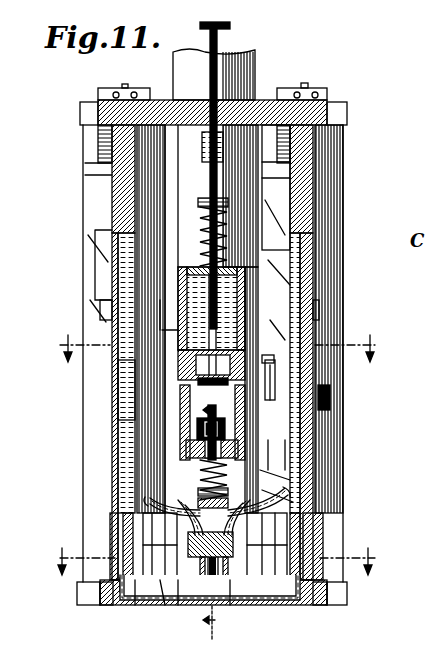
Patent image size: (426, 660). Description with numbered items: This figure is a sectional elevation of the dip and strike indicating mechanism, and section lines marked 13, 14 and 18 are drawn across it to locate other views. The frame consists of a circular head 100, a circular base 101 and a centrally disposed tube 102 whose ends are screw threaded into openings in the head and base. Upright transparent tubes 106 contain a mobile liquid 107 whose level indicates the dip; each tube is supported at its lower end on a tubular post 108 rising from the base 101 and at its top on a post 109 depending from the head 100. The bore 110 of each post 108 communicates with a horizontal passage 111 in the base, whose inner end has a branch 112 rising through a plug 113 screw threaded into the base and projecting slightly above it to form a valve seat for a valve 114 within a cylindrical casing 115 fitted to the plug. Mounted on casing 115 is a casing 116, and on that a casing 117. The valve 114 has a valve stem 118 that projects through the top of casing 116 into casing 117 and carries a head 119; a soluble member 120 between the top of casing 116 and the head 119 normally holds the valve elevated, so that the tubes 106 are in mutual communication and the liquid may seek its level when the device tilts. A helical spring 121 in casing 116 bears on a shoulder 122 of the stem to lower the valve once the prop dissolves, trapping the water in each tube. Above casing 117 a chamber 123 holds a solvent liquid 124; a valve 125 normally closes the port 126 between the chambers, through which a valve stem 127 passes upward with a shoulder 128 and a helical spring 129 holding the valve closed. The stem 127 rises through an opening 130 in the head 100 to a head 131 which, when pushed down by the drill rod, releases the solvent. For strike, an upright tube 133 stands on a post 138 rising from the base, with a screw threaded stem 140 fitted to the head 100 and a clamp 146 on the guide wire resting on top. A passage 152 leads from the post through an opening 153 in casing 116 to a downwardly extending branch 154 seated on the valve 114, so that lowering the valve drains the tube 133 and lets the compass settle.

The head 100 is at (347, 110).
The base 101 is at (347, 596).
The centrally disposed tube 102 is at (165, 200).
The upright parallel tubes 106 is at (112, 300).
The mobile liquid 107 is at (330, 397).
The post 108 is at (108, 549).
The post 109 is at (118, 195).
The bore 110 is at (110, 590).
The horizontal passage 111 is at (140, 606).
The branch 112 is at (180, 606).
The plug 113 is at (228, 608).
The valve 114 is at (166, 606).
The cylindrical casing 115 is at (115, 607).
The casing 116 is at (265, 452).
The casing 117 is at (275, 363).
The valve stem 118 is at (200, 452).
The head 119 is at (195, 421).
The soluble member 120 is at (186, 444).
The helical spring 121 is at (198, 470).
The head or shoulder 122 is at (195, 486).
The chamber or casing 123 is at (237, 283).
The liquid 124 is at (232, 300).
The valve 125 is at (118, 394).
The port or passage 126 is at (128, 378).
The valve stem 127 is at (180, 50).
The head or shoulder 128 is at (205, 197).
The helical spring 129 is at (200, 212).
The opening 130 is at (255, 82).
The head or enlargement 131 is at (230, 25).
The upright tube 133 is at (100, 265).
The post 138 is at (300, 497).
The tubular externally screw threaded stem 140 is at (330, 143).
The clamp 146 is at (110, 96).
The tube or passage 152 is at (150, 500).
The opening 153 is at (262, 470).
The downwardly extending branch 154 is at (322, 536).
The section line 13 is at (220, 340).
The section line 14 is at (214, 561).
The section line 18 is at (214, 525).